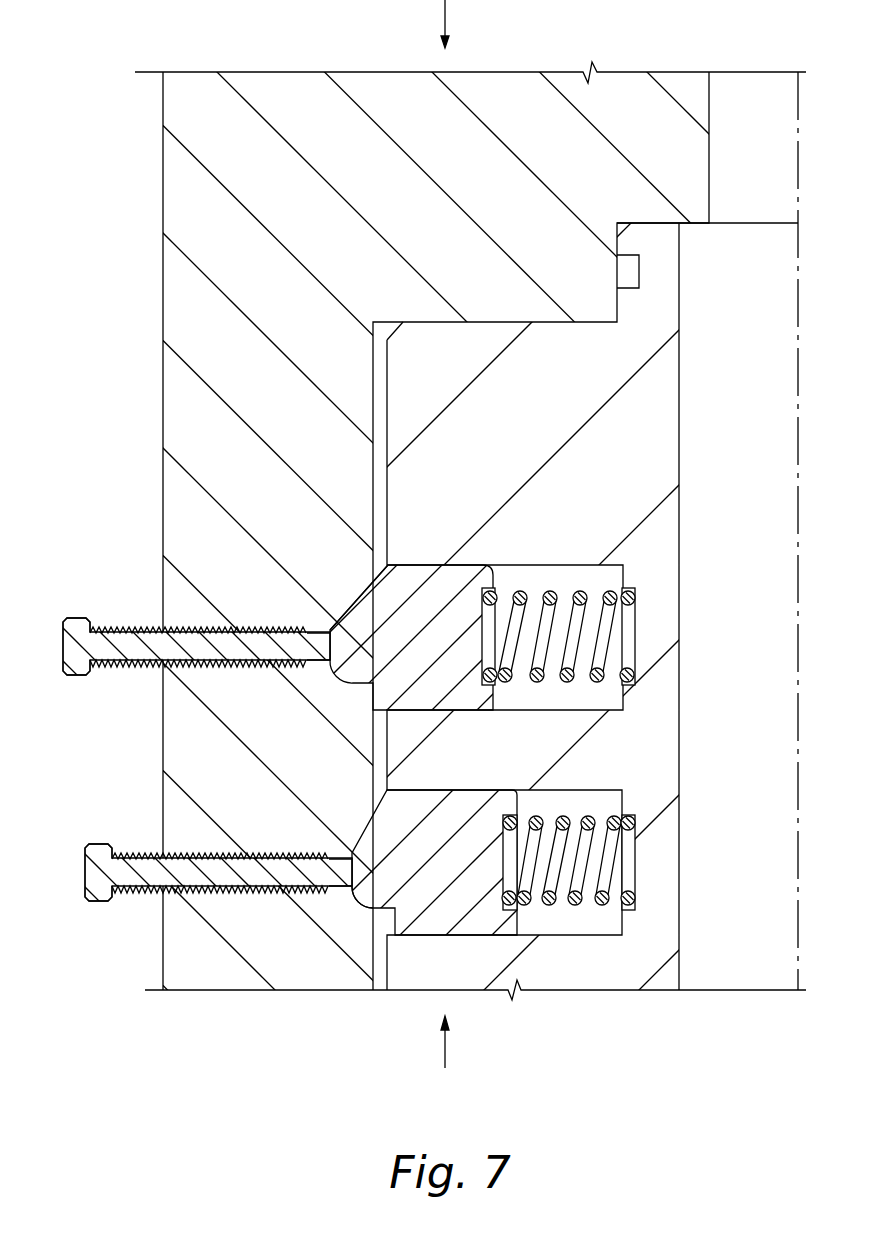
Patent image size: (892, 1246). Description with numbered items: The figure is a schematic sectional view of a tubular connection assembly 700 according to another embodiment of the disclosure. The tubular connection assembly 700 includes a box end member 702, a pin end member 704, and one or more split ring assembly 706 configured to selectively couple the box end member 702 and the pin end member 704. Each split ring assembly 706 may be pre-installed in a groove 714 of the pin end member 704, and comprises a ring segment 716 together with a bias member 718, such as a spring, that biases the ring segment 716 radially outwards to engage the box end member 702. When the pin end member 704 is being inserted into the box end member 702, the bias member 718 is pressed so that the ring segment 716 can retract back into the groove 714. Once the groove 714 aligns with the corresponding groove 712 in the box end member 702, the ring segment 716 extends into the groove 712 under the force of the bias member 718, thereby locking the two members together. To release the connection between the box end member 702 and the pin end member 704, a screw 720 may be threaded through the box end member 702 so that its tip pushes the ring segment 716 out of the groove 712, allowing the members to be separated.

The tubular connection assembly 700 is at (133, 126).
The box end member 702 is at (180, 296).
The pin end member 704 is at (670, 441).
The split ring assembly 706 is at (350, 594).
The groove in the box end member 712 is at (335, 886).
The groove of the pin end member 714 is at (558, 713).
The ring segment 716 is at (408, 567).
The bias member 718 is at (536, 687).
The screw 720 is at (77, 617).